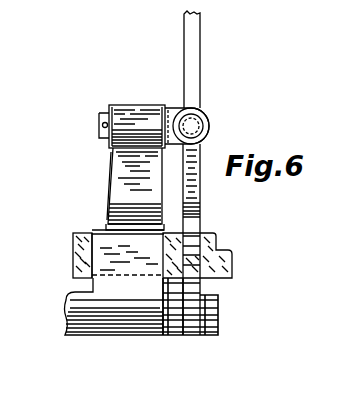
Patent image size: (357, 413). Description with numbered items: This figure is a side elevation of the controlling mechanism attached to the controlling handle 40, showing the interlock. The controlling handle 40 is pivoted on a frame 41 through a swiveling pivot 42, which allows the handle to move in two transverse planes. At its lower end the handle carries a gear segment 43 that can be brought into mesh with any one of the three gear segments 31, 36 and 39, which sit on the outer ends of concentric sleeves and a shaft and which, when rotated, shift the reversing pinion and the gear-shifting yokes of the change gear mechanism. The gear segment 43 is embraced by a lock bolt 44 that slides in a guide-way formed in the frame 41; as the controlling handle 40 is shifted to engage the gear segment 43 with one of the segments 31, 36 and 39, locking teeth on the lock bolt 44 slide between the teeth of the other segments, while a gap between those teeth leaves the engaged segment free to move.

The controlling handle 40 is at (193, 76).
The swiveling pivot 42 is at (100, 124).
The frame 41 is at (122, 178).
The gear segment 43 is at (203, 224).
The lock bolt 44 is at (75, 246).
The gear segment 31 is at (168, 337).
The gear segment 36 is at (192, 337).
The gear segment 39 is at (218, 337).